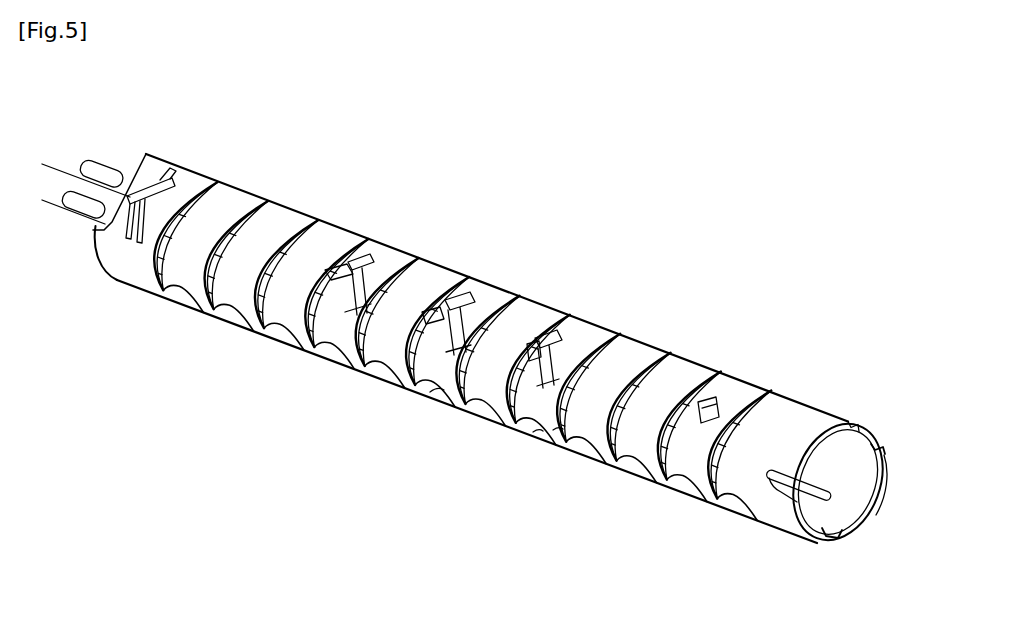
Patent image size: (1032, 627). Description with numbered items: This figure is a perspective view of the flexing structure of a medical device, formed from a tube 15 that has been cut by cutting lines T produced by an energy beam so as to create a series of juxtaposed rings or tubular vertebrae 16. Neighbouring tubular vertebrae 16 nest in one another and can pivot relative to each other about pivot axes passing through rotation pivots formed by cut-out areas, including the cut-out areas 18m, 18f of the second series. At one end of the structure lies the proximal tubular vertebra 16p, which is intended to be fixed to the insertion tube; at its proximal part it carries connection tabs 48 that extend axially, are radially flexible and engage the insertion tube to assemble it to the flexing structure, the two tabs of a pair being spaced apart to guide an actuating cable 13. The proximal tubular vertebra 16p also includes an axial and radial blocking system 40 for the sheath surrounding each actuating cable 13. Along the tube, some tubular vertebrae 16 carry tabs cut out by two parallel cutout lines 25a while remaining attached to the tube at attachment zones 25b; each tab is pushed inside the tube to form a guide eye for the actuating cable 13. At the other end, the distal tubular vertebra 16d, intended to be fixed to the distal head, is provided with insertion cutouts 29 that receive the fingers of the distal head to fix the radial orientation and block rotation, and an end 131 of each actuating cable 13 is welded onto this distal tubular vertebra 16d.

The tube 15 is at (650, 313).
The tubular vertebrae 16 is at (493, 378).
The proximal tubular vertebra 16p is at (123, 273).
The distal tubular vertebra 16d is at (793, 415).
The connection tabs 48 is at (93, 163).
The axial and radial blocking system 40 is at (181, 157).
The parallel cutout lines 25a is at (493, 298).
The attachment zones 25b is at (375, 262).
The actuating cable 13 is at (538, 340).
The end of actuating cable 131 is at (880, 506).
The insertion cutouts 29 is at (862, 437).
The cutting lines T is at (433, 390).
The cut-out area of second series 18m is at (535, 430).
The cut-out area of second series 18f is at (553, 432).